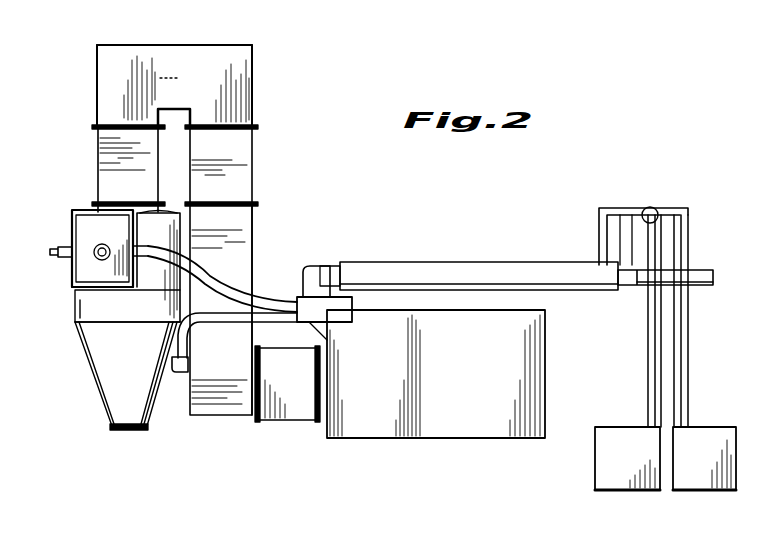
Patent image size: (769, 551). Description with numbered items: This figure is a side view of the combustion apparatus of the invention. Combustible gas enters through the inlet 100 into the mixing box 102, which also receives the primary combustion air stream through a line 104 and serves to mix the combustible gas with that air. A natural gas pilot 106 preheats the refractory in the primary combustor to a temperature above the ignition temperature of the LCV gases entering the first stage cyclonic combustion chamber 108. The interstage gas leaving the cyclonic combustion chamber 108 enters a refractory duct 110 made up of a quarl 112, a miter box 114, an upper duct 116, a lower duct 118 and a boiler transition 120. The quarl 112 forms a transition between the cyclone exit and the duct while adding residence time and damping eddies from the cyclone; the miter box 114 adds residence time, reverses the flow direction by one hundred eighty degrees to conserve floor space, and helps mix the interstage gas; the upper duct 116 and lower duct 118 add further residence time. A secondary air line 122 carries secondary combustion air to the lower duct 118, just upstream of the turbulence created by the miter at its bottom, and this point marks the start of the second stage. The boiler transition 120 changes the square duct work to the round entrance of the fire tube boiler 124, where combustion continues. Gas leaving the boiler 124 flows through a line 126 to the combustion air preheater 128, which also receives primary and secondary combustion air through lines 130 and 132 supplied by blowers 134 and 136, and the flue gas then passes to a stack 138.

The inlet 100 is at (100, 244).
The mixing box 102 is at (80, 280).
The line 104 is at (165, 268).
The natural gas pilot 106 is at (58, 255).
The first stage cyclonic combustion chamber 108 is at (75, 323).
The refractory duct 110 is at (107, 63).
The quarl 112 is at (92, 156).
The miter box 114 is at (197, 41).
The upper duct 116 is at (253, 150).
The lower duct 118 is at (253, 232).
The boiler transition 120 is at (290, 422).
The secondary air line 122 is at (218, 323).
The fire tube boiler 124 is at (415, 436).
The line 126 is at (292, 280).
The combustion air preheater 128 is at (402, 263).
The line 130 is at (690, 345).
The line 132 is at (646, 343).
The blower 134 is at (705, 488).
The blower 136 is at (600, 468).
The stack 138 is at (700, 262).